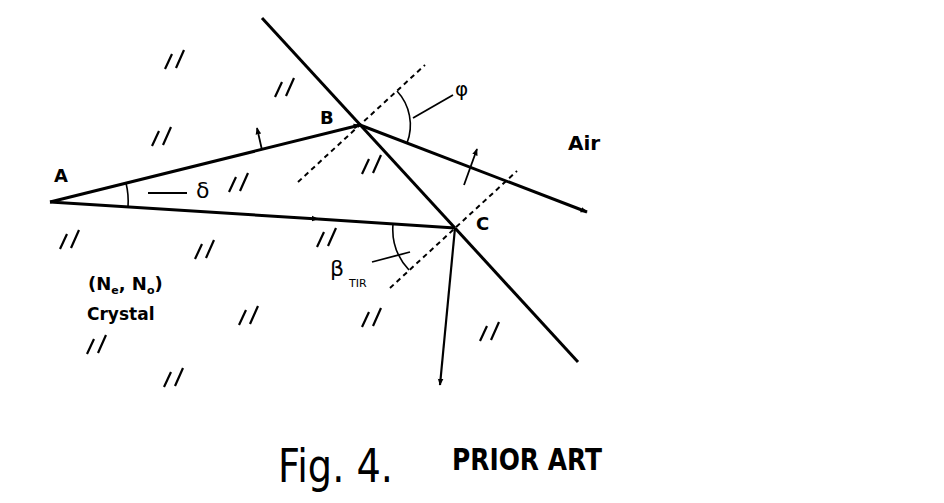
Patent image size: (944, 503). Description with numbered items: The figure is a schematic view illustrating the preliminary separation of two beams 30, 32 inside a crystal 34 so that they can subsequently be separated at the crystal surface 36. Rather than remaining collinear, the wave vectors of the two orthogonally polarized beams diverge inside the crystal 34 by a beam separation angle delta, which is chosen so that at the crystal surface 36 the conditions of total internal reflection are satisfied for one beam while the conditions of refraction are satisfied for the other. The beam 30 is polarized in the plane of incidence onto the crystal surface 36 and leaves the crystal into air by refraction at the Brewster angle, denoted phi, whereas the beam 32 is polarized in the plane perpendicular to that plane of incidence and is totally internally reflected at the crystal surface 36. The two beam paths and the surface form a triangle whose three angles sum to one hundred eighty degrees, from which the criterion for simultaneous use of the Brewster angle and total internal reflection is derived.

The beam 30 is at (240, 157).
The beam 32 is at (268, 218).
The crystal 34 is at (319, 55).
The crystal surface 36 is at (538, 317).